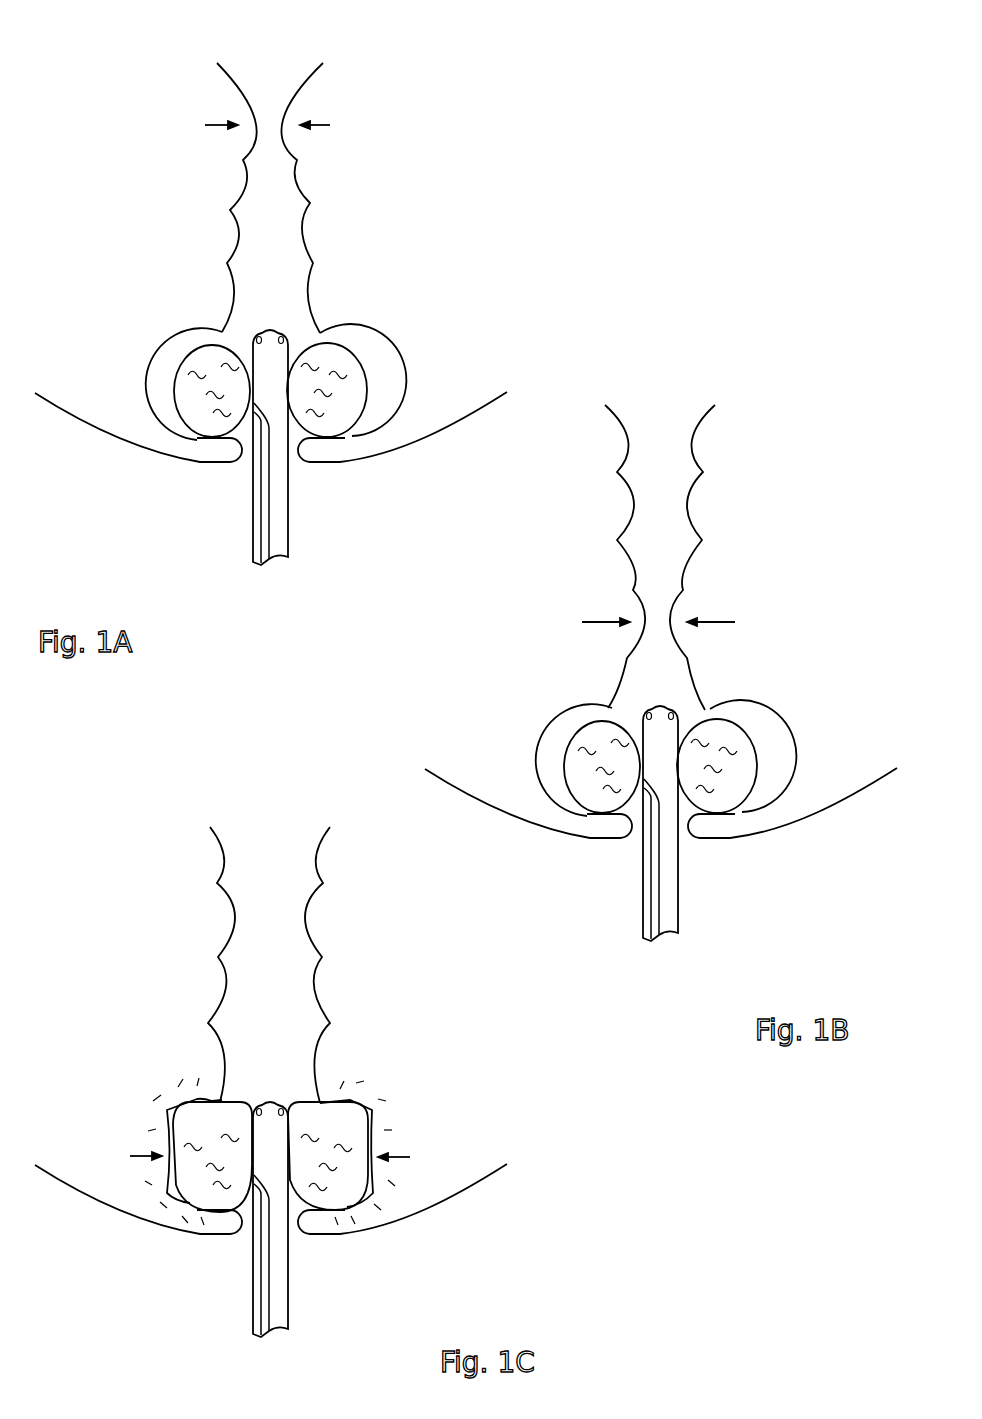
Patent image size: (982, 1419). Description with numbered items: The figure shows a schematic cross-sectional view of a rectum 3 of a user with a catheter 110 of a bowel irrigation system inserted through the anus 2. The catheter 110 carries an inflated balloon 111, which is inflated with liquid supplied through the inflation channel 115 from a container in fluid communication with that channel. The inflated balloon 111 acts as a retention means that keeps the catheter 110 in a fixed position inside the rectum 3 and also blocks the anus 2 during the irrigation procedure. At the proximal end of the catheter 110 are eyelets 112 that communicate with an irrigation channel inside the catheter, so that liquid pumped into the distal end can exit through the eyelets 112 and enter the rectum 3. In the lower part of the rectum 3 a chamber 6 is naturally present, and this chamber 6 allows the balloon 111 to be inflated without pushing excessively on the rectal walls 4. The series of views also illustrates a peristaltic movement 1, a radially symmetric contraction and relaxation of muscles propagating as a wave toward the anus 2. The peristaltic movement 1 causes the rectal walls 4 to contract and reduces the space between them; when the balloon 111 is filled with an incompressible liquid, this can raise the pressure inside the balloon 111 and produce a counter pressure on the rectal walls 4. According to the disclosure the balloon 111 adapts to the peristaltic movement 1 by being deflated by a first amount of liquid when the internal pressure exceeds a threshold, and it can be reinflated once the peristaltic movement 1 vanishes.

In FIG. 1A, the peristaltic movement 1 is at (328, 125).
In FIG. 1B, the peristaltic movement 1 is at (708, 618).
In FIG. 1C, the peristaltic movement 1 is at (403, 1152).
In FIG. 1A, the anus 2 is at (297, 466).
In FIG. 1B, the anus 2 is at (683, 836).
In FIG. 1C, the anus 2 is at (295, 1235).
In FIG. 1A, the rectum 3 is at (277, 75).
In FIG. 1B, the rectum 3 is at (665, 405).
In FIG. 1C, the rectum 3 is at (272, 830).
In FIG. 1A, the rectal walls 4 is at (296, 224).
In FIG. 1B, the rectal walls 4 is at (680, 500).
In FIG. 1C, the rectal walls 4 is at (303, 937).
In FIG. 1A, the chamber 6 is at (186, 329).
In FIG. 1B, the chamber 6 is at (552, 713).
In FIG. 1C, the chamber 6 is at (178, 1099).
In FIG. 1A, the catheter 110 is at (277, 545).
In FIG. 1B, the catheter 110 is at (667, 923).
In FIG. 1C, the catheter 110 is at (283, 1321).
In FIG. 1A, the balloon 111 is at (343, 364).
In FIG. 1B, the balloon 111 is at (732, 740).
In FIG. 1C, the balloon 111 is at (347, 1123).
In FIG. 1A, the eyelets 112 is at (282, 334).
In FIG. 1B, the eyelets 112 is at (650, 712).
In FIG. 1C, the eyelets 112 is at (260, 1103).
In FIG. 1A, the inflation channel 115 is at (264, 545).
In FIG. 1B, the inflation channel 115 is at (652, 917).
In FIG. 1C, the inflation channel 115 is at (264, 1297).